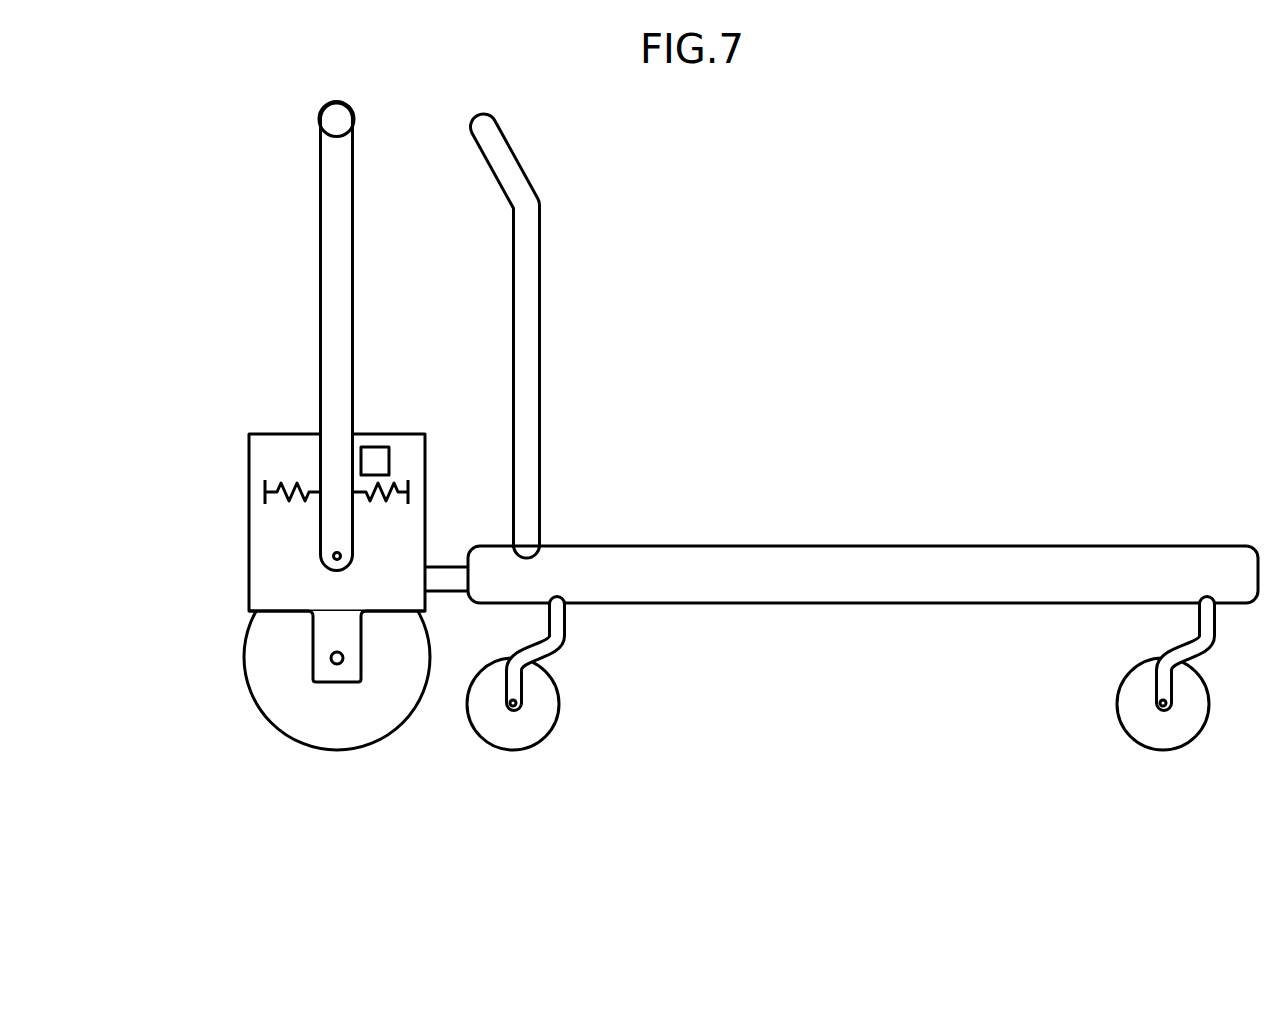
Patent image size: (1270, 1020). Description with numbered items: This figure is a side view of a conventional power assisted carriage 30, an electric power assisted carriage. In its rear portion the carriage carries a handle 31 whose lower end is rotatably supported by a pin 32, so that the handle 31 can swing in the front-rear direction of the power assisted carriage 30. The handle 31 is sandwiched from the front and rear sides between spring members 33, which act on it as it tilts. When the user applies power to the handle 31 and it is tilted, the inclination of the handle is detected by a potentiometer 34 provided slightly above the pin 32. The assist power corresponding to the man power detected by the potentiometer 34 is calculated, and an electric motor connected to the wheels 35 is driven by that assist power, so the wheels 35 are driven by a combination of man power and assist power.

The power assisted carriage 30 is at (237, 740).
The handle 31 is at (331, 181).
The pin 32 is at (333, 557).
The spring members 33 is at (265, 492).
The potentiometer 34 is at (377, 450).
The wheels 35 is at (377, 720).